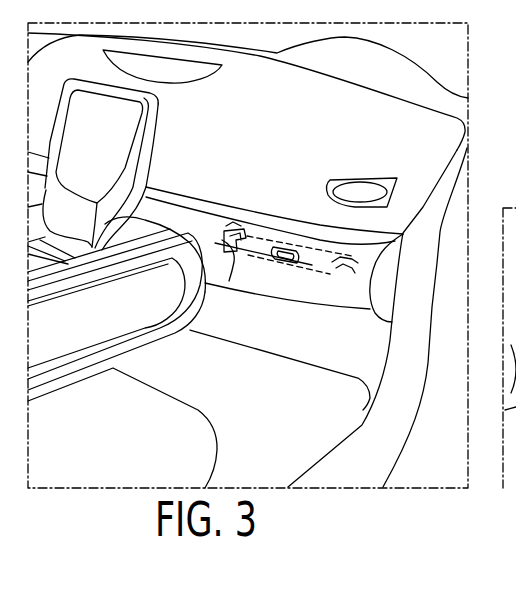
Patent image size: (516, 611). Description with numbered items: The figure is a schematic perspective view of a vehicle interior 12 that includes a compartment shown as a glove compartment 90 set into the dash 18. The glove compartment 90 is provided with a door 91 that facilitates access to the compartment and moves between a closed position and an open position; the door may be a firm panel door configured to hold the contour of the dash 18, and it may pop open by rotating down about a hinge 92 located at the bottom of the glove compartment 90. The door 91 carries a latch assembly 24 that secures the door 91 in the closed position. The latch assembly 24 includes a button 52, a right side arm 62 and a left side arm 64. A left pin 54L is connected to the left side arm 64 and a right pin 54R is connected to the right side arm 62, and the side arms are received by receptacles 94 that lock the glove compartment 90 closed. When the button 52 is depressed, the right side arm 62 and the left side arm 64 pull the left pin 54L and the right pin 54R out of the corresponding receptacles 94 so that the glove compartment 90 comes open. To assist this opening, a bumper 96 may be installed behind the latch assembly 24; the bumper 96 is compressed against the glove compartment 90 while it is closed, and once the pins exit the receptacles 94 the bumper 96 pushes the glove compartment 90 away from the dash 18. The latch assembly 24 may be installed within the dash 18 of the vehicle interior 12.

The vehicle interior 12 is at (376, 131).
The dash 18 is at (360, 294).
The latch assembly 24 is at (293, 282).
The button 52 is at (231, 258).
The left pin 54L is at (240, 228).
The right pin 54R is at (348, 250).
The right side arm 62 is at (327, 248).
The left side arm 64 is at (273, 245).
The glove compartment 90 is at (280, 282).
The door 91 is at (222, 240).
The hinge 92 is at (215, 290).
The receptacles 94 is at (233, 243).
The bumper 96 is at (307, 245).